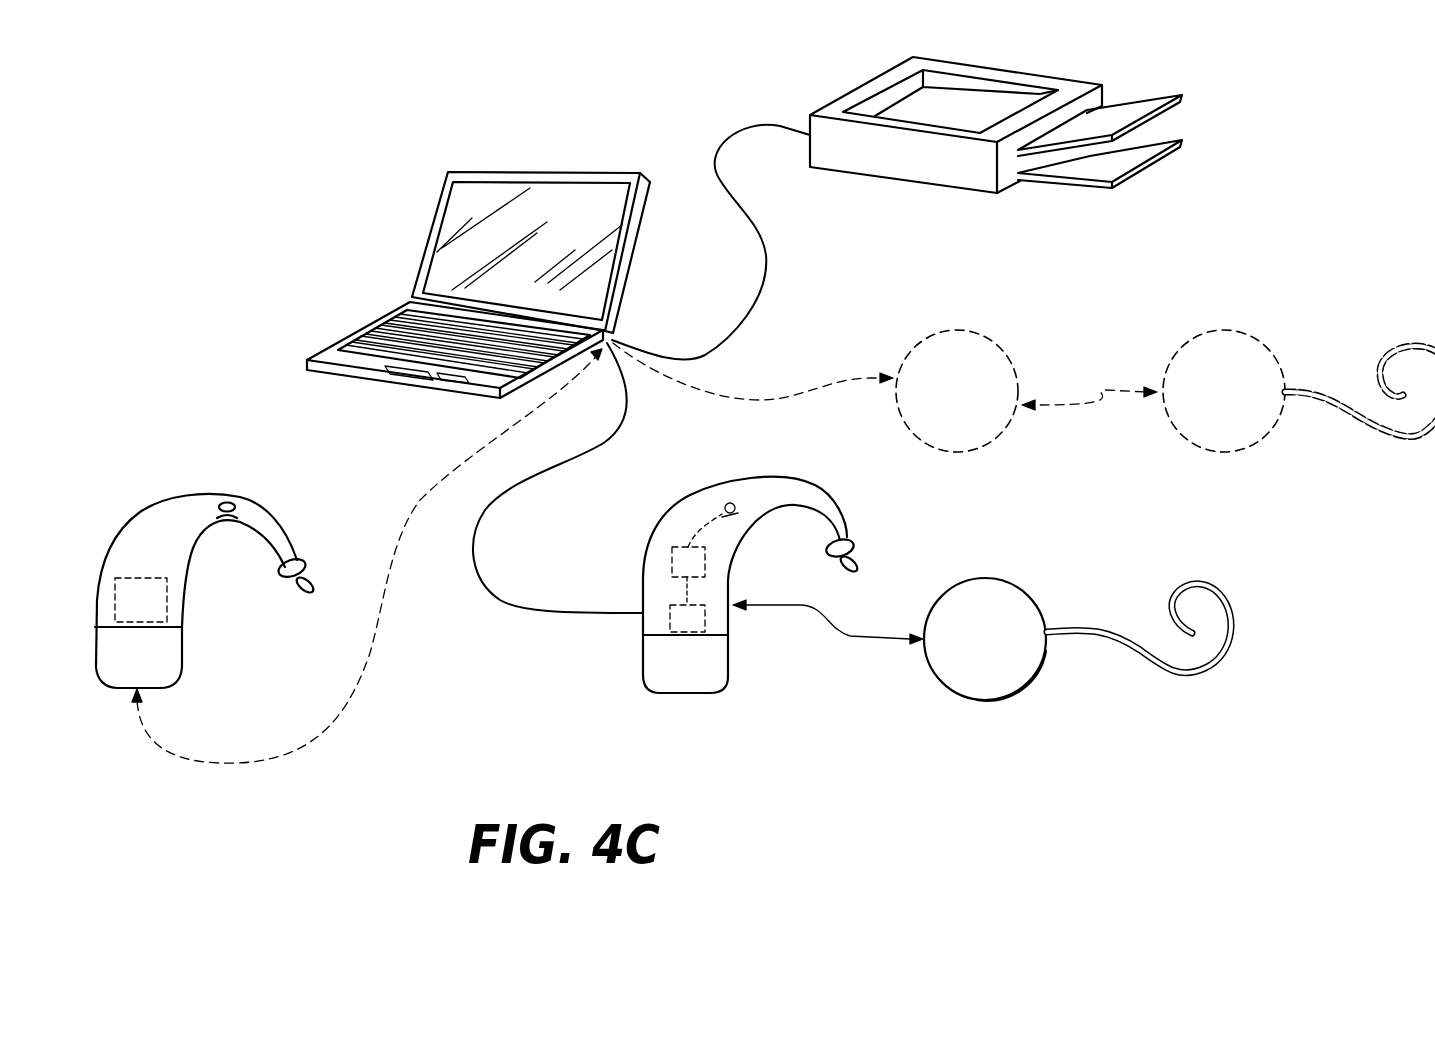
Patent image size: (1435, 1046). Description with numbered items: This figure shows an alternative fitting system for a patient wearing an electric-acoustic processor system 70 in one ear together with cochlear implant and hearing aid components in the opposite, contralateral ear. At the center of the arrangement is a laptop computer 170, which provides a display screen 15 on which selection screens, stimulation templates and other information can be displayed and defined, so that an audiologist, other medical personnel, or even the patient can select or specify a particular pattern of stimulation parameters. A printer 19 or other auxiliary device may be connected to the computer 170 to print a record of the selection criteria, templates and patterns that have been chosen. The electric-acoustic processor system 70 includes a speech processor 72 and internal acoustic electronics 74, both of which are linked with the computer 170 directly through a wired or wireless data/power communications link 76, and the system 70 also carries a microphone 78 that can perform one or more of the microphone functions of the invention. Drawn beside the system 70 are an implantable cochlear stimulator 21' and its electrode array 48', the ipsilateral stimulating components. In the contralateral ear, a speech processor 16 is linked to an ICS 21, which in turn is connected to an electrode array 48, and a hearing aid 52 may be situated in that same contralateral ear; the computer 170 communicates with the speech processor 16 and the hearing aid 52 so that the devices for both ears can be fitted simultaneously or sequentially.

The display screen 15 is at (467, 218).
The laptop computer 170 is at (348, 342).
The printer 19 is at (917, 180).
The speech processor 16 is at (973, 330).
The implantable cochlear stimulator 21 is at (1224, 356).
The electrode array 48 is at (1360, 354).
The hearing aid 52 is at (150, 502).
The electric-acoustic processor system 70 is at (860, 582).
The speech processor 72 is at (670, 622).
The internal acoustic electronics 74 is at (672, 557).
The data/power communications link 76 is at (567, 462).
The microphone 78 is at (727, 503).
The implantable cochlear stimulator 21' is at (985, 604).
The electrode array 48' is at (1139, 592).